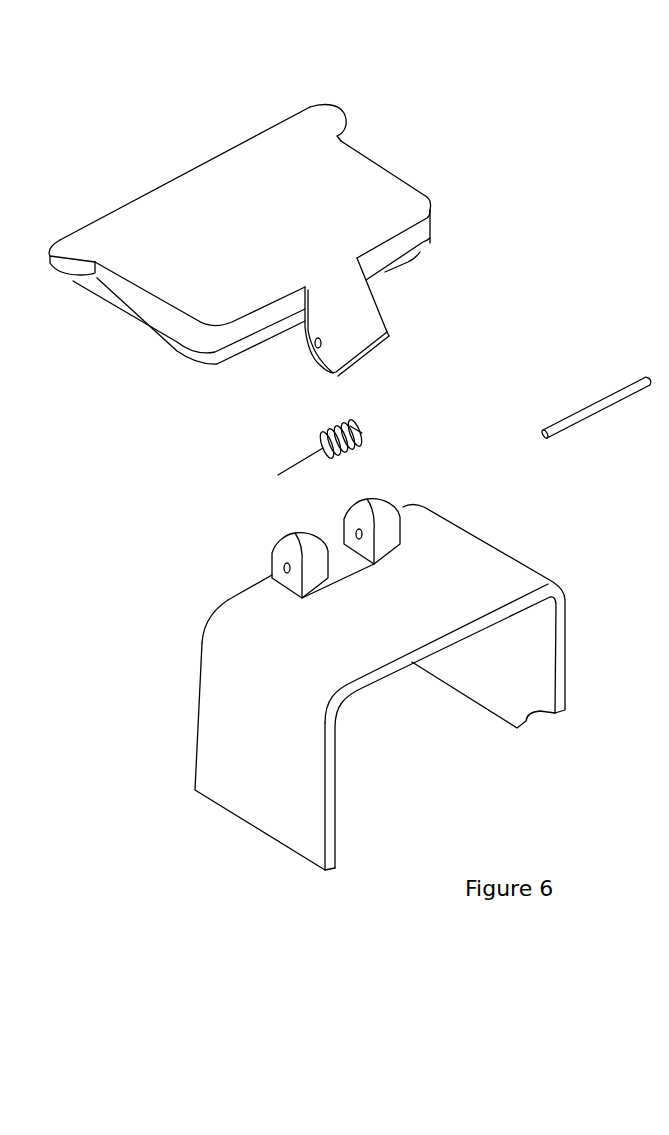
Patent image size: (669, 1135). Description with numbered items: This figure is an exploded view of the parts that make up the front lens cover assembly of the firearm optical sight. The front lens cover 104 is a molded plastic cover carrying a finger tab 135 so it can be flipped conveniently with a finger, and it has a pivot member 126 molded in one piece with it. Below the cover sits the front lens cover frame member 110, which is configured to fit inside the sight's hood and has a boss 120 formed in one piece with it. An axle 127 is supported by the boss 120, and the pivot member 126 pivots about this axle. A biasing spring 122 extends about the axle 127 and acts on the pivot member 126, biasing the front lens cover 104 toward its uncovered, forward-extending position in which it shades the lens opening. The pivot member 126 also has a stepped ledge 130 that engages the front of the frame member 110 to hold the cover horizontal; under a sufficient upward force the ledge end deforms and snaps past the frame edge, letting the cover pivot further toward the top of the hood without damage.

The front lens cover 104 is at (384, 169).
The finger tab 135 is at (340, 108).
The pivot member 126 is at (380, 290).
The stepped ledge 130 is at (375, 345).
The biasing spring 122 is at (320, 441).
The axle 127 is at (592, 400).
The front lens cover frame member 110 is at (520, 563).
The boss 120 is at (390, 492).